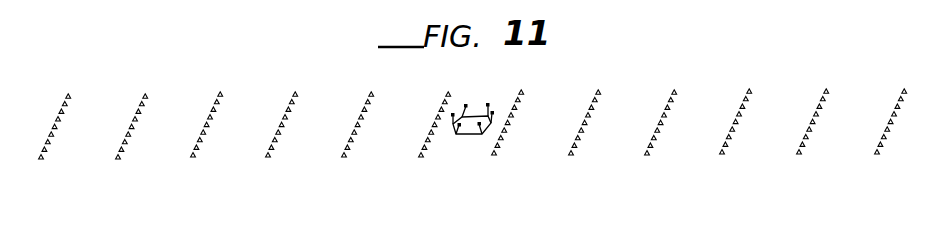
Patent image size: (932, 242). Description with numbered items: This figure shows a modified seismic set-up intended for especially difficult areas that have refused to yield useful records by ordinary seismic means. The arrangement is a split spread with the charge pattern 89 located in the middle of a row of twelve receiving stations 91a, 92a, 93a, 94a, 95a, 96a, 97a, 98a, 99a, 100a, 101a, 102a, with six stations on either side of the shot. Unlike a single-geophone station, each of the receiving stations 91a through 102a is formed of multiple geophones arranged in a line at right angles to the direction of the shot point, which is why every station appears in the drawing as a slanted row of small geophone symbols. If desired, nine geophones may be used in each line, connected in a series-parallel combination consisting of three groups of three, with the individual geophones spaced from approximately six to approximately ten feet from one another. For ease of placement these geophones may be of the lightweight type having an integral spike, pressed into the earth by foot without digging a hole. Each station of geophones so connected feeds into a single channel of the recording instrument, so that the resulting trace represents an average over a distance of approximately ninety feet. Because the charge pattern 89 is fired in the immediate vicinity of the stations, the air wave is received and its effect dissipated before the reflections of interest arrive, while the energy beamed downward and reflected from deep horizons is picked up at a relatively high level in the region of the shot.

The charge pattern 89 is at (482, 95).
The receiving station 91a is at (41, 159).
The receiving station 92a is at (118, 159).
The receiving station 93a is at (193, 157).
The receiving station 94a is at (268, 157).
The receiving station 95a is at (344, 157).
The receiving station 96a is at (421, 157).
The receiving station 97a is at (494, 155).
The receiving station 98a is at (571, 155).
The receiving station 99a is at (647, 155).
The receiving station 100a is at (722, 154).
The receiving station 101a is at (799, 154).
The receiving station 102a is at (877, 154).